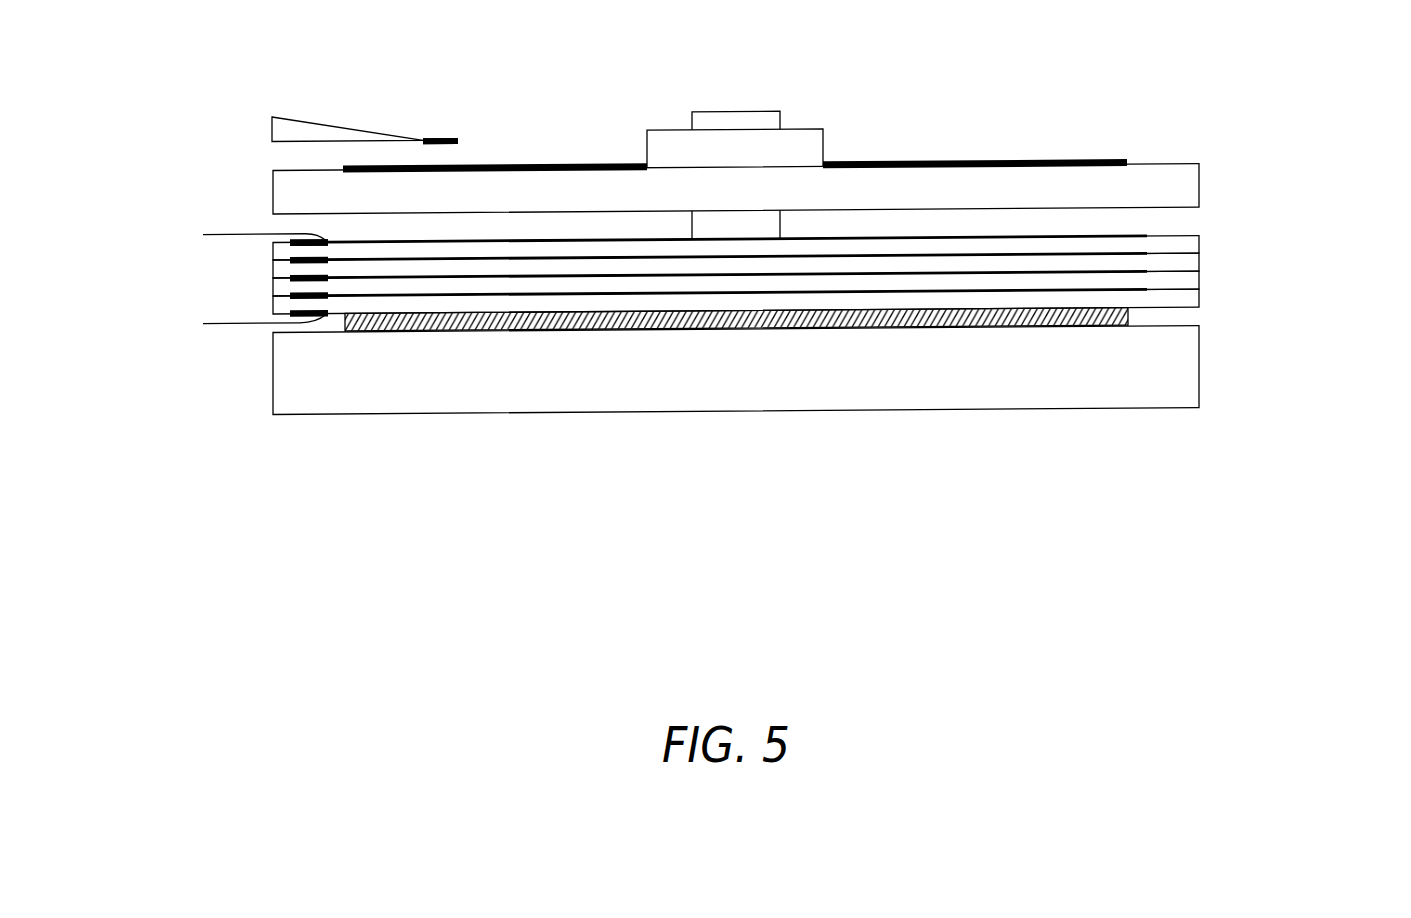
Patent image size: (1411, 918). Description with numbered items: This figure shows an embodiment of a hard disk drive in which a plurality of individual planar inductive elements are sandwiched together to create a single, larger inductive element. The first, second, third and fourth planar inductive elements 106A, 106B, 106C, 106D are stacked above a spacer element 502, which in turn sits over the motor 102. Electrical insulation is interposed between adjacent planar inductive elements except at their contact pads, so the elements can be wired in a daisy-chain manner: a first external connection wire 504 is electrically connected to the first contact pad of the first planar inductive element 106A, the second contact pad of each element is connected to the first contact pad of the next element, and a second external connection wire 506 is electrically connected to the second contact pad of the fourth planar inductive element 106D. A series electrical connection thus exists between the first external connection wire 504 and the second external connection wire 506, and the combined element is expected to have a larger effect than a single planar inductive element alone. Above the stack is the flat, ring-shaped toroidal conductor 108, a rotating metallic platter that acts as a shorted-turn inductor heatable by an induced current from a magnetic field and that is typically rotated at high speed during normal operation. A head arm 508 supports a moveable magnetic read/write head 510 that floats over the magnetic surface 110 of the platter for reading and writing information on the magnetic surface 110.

The motor 102 is at (273, 387).
The first planar inductive element 106A is at (1202, 243).
The second planar inductive element 106B is at (1202, 260).
The third planar inductive element 106C is at (1202, 278).
The fourth planar inductive element 106D is at (1202, 297).
The toroidal conductor 108 is at (272, 190).
The magnetic surface 110 is at (957, 161).
The spacer element 502 is at (560, 330).
The first external connection wire 504 is at (225, 234).
The second external connection wire 506 is at (228, 323).
The head arm 508 is at (272, 126).
The magnetic read/write head 510 is at (437, 139).